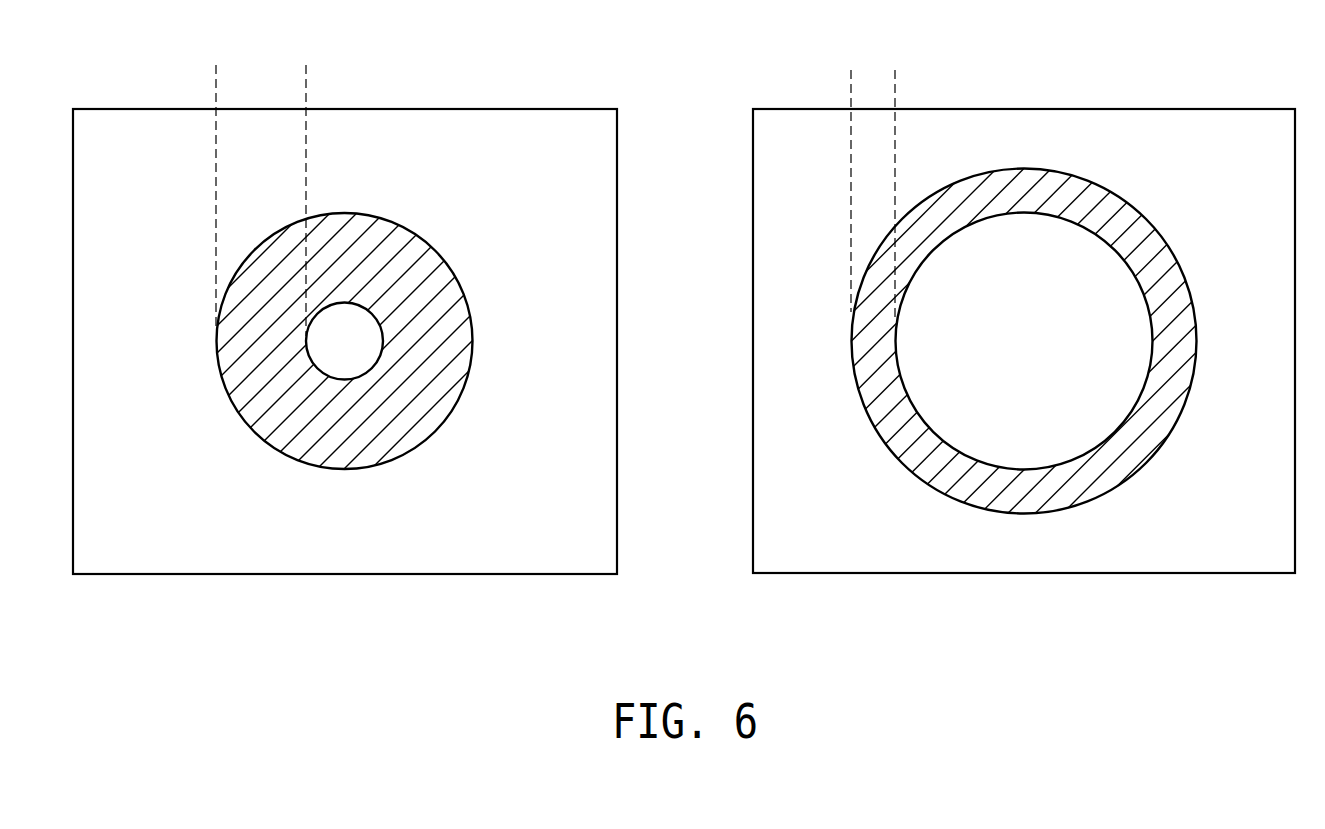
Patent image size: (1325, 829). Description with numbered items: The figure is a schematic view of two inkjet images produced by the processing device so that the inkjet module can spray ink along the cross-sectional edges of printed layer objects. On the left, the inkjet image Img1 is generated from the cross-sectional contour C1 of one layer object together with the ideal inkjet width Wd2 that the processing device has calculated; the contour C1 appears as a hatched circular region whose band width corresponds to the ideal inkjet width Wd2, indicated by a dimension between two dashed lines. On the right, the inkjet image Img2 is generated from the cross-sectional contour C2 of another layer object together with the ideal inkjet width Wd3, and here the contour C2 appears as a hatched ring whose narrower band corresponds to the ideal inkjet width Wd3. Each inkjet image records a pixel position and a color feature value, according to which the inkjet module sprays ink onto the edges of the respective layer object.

The inkjet image Img1 is at (536, 109).
The inkjet image Img2 is at (1215, 109).
The cross-sectional contour C1 is at (354, 470).
The cross-sectional contour C2 is at (1040, 514).
The ideal inkjet width Wd2 is at (306, 81).
The ideal inkjet width Wd3 is at (895, 83).